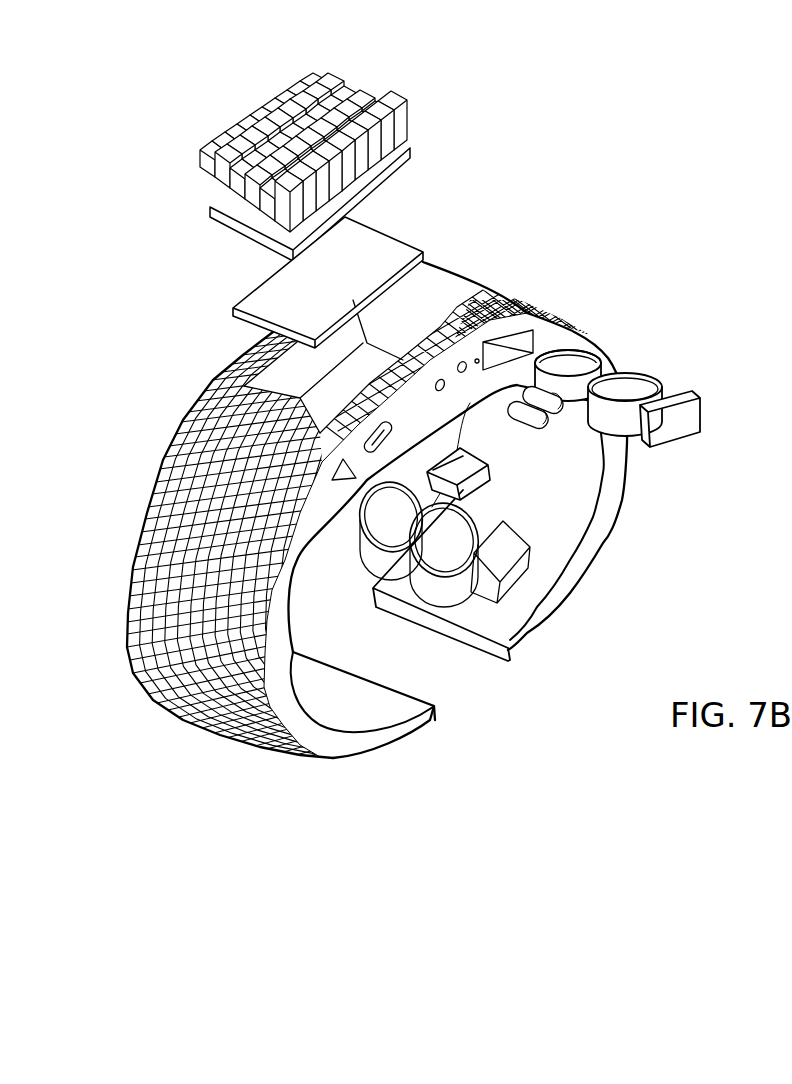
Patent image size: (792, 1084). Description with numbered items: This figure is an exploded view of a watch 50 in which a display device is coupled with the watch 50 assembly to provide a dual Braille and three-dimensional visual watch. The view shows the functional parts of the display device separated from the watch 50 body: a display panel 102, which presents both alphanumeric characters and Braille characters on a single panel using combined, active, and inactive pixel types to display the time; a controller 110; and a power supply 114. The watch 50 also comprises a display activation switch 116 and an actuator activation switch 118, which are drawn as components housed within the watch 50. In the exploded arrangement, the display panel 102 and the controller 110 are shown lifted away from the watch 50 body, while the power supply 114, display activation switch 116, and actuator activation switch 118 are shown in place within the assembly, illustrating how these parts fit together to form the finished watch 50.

The watch 50 is at (186, 400).
The display panel 102 is at (418, 116).
The controller 110 is at (428, 240).
The power supply 114 is at (650, 362).
The display activation switch 116 is at (565, 437).
The actuator activation switch 118 is at (498, 482).